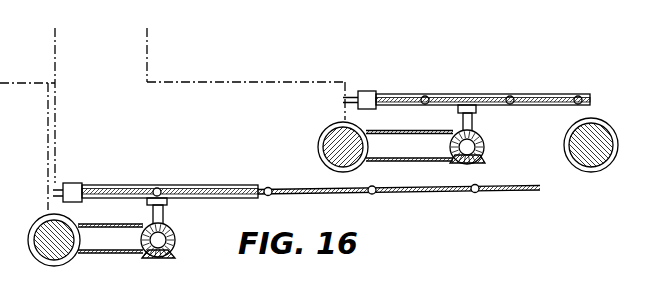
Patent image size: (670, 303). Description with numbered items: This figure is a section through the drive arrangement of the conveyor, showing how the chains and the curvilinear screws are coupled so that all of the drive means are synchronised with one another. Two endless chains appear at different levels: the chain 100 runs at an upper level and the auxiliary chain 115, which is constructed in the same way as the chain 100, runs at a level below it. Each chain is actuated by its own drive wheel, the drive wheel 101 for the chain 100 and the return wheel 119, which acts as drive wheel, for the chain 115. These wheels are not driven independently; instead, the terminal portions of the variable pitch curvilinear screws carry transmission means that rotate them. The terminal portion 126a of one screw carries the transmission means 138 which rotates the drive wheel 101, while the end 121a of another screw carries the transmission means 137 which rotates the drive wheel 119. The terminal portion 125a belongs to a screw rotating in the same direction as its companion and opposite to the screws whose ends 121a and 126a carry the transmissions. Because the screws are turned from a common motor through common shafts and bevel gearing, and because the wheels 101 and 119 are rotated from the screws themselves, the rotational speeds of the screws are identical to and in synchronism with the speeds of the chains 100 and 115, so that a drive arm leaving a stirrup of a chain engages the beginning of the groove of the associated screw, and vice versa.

The endless chain 100 is at (545, 94).
The drive wheel 101 is at (449, 94).
The auxiliary chain 115 is at (511, 192).
The return wheel 119 is at (191, 185).
The end of curvilinear screw 121a is at (38, 266).
The terminal portion of screw 125a is at (590, 168).
The terminal portion of screw 126a is at (318, 147).
The transmission means 137 is at (119, 269).
The transmission means 138 is at (419, 178).